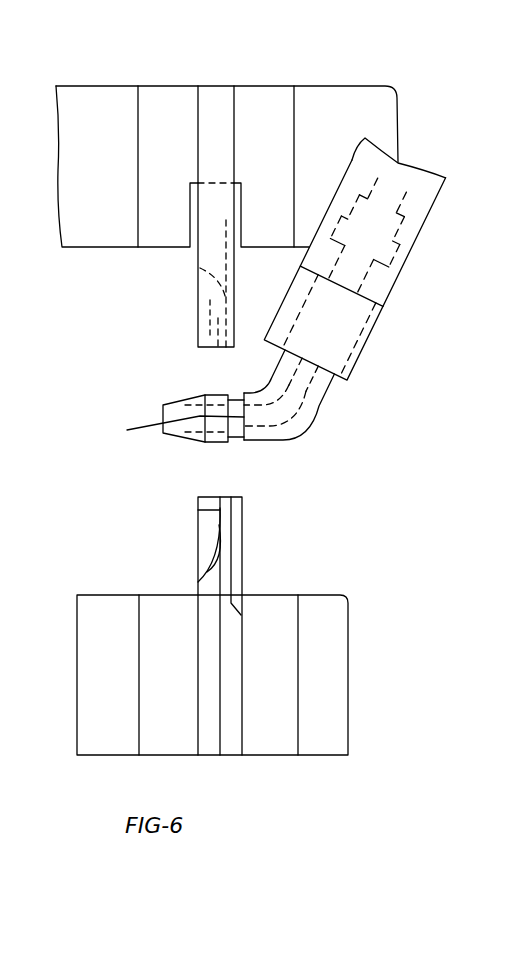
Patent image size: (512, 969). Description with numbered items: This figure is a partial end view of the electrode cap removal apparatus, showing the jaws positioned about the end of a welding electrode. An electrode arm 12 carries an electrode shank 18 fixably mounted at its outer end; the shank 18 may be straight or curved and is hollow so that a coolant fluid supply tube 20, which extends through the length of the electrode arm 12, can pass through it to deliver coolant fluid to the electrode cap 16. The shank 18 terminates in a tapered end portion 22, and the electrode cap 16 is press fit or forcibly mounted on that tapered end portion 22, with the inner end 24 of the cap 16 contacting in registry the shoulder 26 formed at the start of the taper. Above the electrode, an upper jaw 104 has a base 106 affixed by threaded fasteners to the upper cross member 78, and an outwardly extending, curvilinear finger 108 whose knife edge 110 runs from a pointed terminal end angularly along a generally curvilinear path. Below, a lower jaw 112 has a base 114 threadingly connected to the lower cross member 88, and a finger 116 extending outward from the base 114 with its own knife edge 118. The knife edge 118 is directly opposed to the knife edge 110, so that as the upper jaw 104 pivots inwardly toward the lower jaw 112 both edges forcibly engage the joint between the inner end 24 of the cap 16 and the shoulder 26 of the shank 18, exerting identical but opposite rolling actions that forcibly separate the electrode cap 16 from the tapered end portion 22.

The electrode arm 12 is at (423, 173).
The electrode cap 16 is at (160, 402).
The electrode shank 18 is at (283, 440).
The coolant fluid supply tube 20 is at (270, 378).
The tapered end portion 22 is at (193, 403).
The inner end 24 is at (127, 430).
The shoulder 26 is at (237, 435).
The upper cross member 78 is at (362, 64).
The lower cross member 88 is at (323, 605).
The upper jaw 104 is at (253, 102).
The base 106 is at (162, 100).
The finger 108 is at (197, 273).
The knife edge 110 is at (217, 313).
The lower jaw 112 is at (190, 565).
The base 114 is at (167, 603).
The finger 116 is at (198, 530).
The knife edge 118 is at (198, 512).